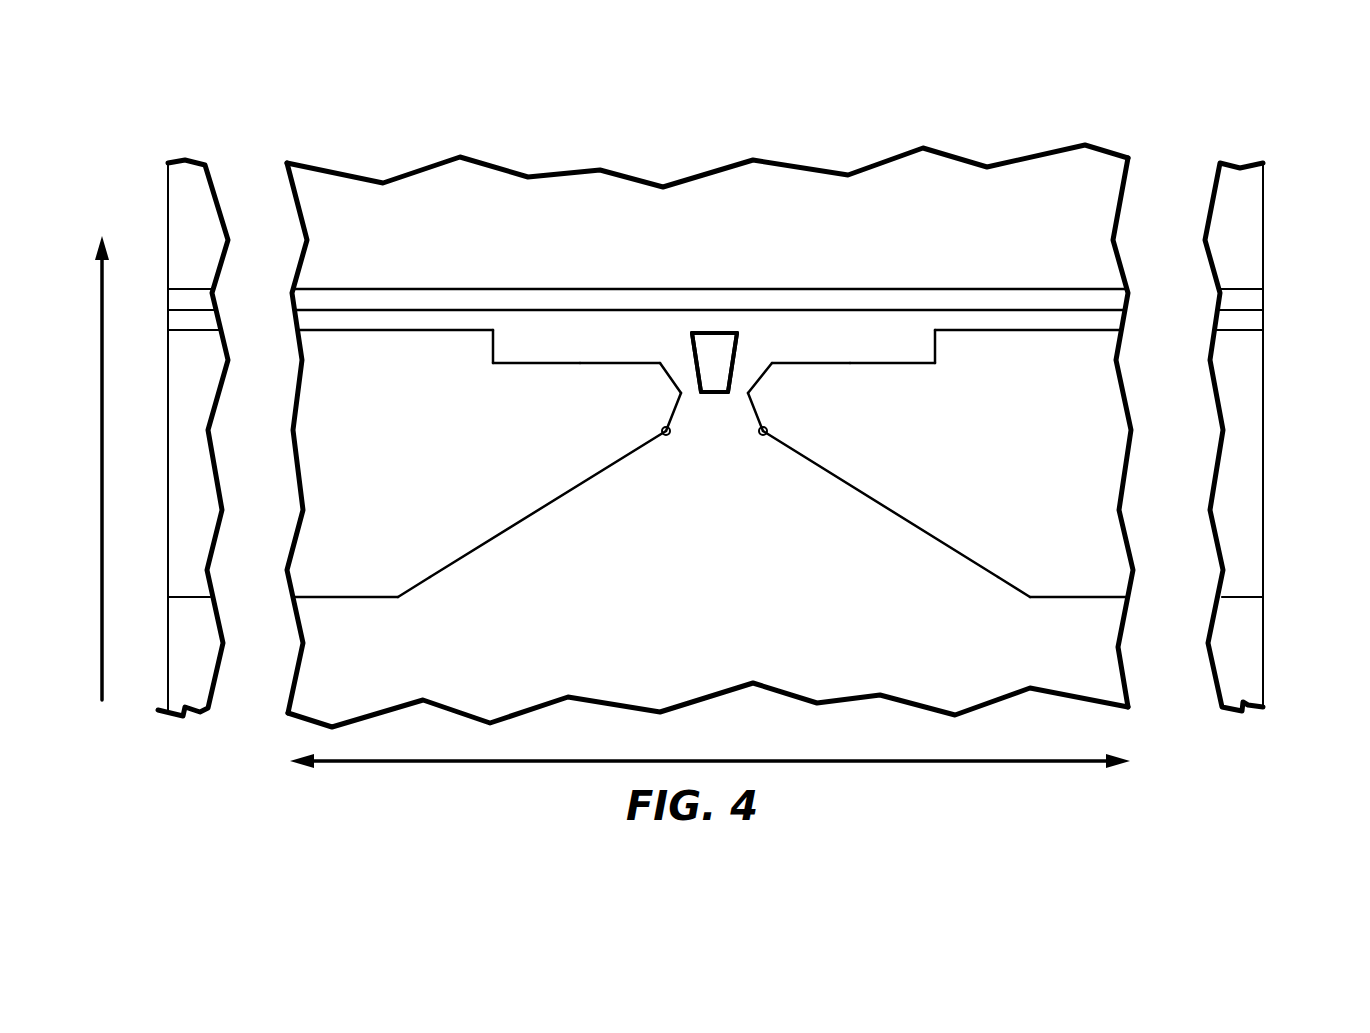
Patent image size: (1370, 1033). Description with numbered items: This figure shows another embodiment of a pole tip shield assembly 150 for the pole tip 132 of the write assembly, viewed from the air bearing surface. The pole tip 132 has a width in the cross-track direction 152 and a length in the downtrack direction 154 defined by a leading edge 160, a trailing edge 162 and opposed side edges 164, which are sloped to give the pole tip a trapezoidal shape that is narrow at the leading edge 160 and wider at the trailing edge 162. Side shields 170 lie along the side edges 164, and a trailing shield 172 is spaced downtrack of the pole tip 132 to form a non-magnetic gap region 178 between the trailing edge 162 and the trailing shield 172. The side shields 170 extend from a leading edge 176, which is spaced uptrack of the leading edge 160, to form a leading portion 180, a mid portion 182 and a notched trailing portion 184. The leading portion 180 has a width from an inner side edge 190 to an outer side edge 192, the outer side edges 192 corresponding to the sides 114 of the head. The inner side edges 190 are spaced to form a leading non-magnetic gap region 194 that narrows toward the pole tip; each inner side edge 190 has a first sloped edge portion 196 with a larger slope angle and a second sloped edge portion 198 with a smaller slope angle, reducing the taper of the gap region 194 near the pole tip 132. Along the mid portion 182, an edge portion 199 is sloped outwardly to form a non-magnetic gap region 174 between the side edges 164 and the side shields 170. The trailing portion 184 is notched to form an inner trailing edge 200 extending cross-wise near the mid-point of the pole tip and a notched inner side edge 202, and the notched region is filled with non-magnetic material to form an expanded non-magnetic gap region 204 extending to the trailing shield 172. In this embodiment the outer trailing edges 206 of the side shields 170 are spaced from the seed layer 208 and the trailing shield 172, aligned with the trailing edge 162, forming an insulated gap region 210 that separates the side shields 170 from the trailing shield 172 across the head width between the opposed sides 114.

The sides of the head 114 is at (168, 581).
The pole tip 132 is at (745, 348).
The pole tip shield assembly 150 is at (959, 348).
The cross-track direction 152 is at (410, 762).
The downtrack direction 154 is at (102, 357).
The leading edge 160 is at (712, 395).
The trailing edge 162 is at (706, 323).
The side edges 164 is at (692, 345).
The side shields 170 is at (439, 478).
The trailing shield 172 is at (922, 216).
The non-magnetic gap region 174 is at (667, 367).
The leading edge of the side shields 176 is at (352, 598).
The non-magnetic gap region 178 is at (719, 318).
The leading portion 180 is at (380, 525).
The mid portion 182 is at (335, 392).
The notched trailing portion 184 is at (403, 358).
The inner side edge 190 is at (547, 522).
The outer side edge 192 is at (168, 489).
The leading non-magnetic gap region 194 is at (694, 556).
The first sloped edge portion 196 is at (603, 480).
The second sloped edge portion 198 is at (663, 428).
The edge portion 199 is at (672, 375).
The inner trailing edge 200 is at (520, 360).
The notched inner side edge 202 is at (495, 348).
The expanded non-magnetic gap region 204 is at (620, 355).
The outer trailing edges 206 is at (338, 328).
The seed layer 208 is at (492, 299).
The insulated gap region 210 is at (455, 320).